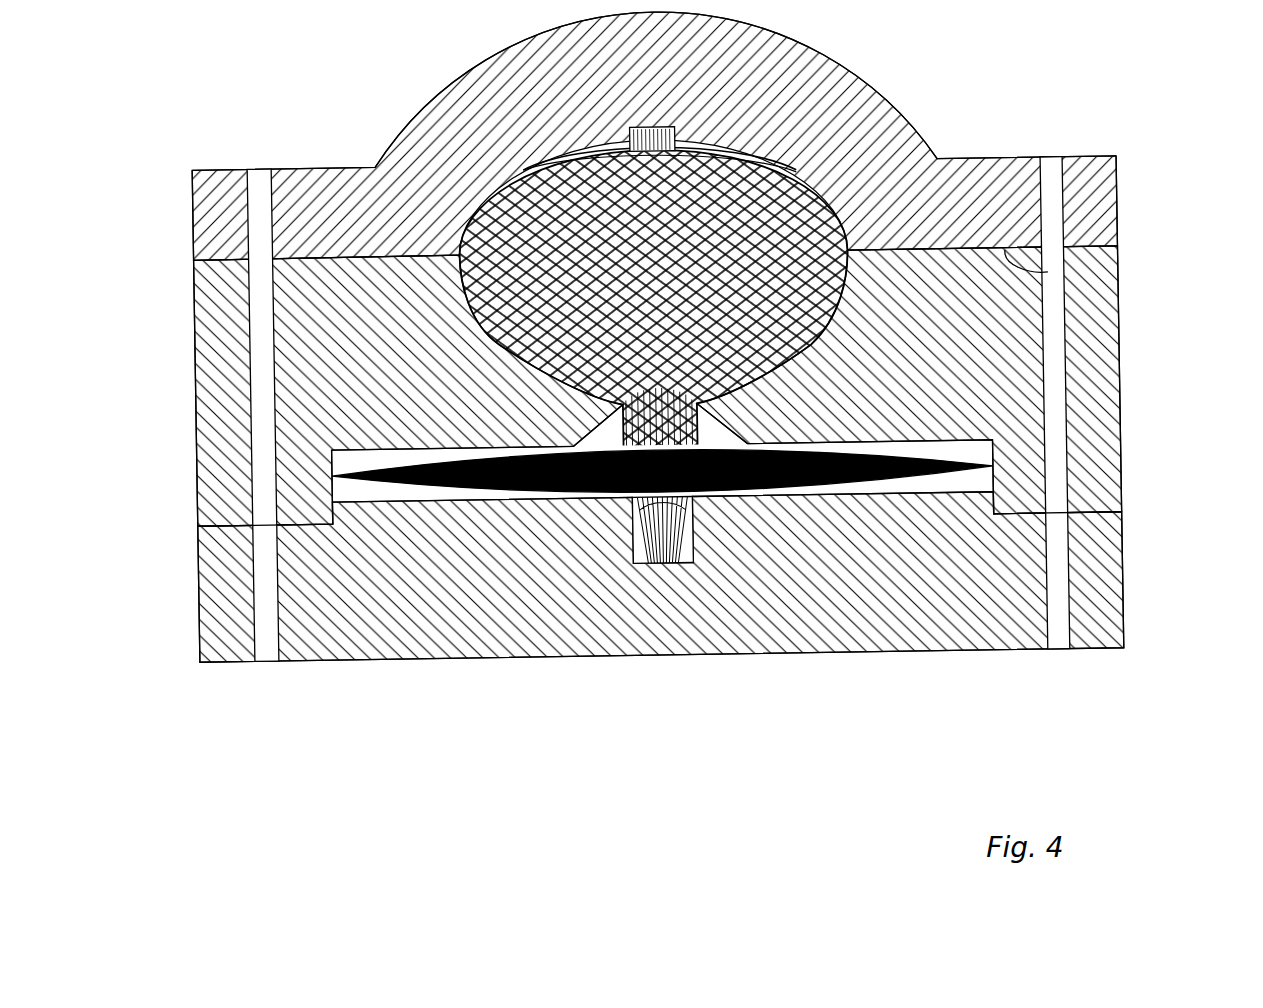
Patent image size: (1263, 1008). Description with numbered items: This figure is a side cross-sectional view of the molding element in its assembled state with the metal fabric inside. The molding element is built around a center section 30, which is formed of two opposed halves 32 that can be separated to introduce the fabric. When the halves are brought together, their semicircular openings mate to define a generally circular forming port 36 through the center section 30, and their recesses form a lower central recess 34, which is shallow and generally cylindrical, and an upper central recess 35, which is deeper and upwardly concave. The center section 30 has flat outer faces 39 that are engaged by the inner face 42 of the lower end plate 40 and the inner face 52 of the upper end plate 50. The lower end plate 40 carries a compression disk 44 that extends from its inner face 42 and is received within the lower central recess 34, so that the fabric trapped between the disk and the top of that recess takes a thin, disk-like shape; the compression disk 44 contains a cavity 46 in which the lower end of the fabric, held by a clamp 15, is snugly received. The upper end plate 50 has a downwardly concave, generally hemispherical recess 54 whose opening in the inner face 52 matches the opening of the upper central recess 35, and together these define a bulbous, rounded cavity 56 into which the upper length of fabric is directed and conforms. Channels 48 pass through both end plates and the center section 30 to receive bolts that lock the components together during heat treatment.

The clamp 15 is at (631, 563).
The center section 30 is at (1142, 421).
The opposed halves 32 is at (211, 335).
The lower central recess 34 is at (424, 446).
The upper central recess 35 is at (844, 293).
The forming port 36 is at (622, 397).
The flat outer faces 39 is at (394, 253).
The lower end plate 40 is at (1132, 615).
The inner face 42 is at (305, 512).
The compression disk 44 is at (892, 498).
The cavity 46 is at (695, 549).
The channels 48 is at (266, 172).
The upper end plate 50 is at (979, 162).
The inner face 52 is at (1050, 278).
The downwardly concave recess 54 is at (804, 174).
The bulbous rounded cavity 56 is at (544, 186).